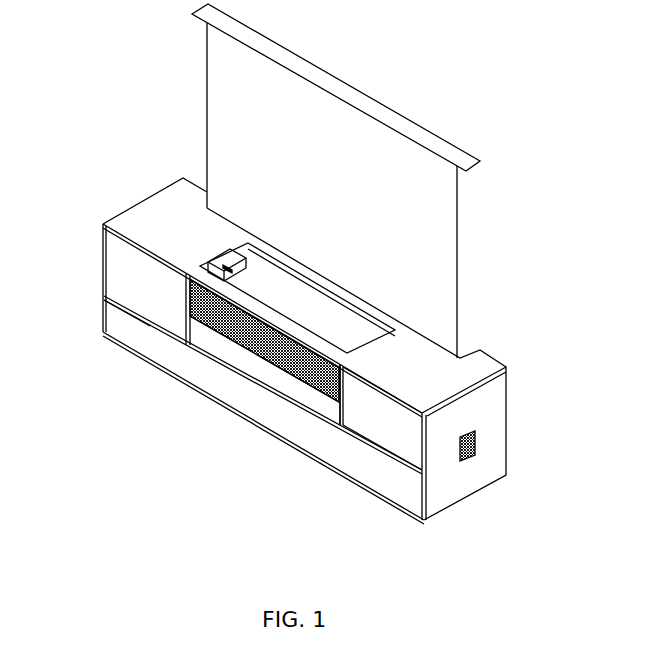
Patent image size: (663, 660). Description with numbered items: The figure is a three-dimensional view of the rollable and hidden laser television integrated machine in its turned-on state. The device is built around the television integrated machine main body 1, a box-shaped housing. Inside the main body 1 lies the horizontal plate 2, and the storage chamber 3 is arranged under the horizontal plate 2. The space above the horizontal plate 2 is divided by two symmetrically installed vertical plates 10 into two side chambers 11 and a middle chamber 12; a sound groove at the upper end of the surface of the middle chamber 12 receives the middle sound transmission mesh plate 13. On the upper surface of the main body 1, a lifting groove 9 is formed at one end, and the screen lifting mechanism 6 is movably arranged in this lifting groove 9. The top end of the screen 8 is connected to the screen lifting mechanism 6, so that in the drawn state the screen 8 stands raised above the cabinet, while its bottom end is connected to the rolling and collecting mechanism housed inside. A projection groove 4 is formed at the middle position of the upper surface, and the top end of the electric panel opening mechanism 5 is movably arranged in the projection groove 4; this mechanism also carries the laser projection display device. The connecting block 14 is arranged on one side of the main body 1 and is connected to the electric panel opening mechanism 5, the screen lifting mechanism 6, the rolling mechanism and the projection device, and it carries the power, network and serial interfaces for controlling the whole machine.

The television integrated machine main body 1 is at (495, 482).
The horizontal plate 2 is at (310, 405).
The storage chamber 3 is at (228, 385).
The projection groove 4 is at (187, 307).
The electric panel opening mechanism 5 is at (230, 250).
The screen lifting mechanism 6 is at (437, 135).
The screen 8 is at (457, 232).
The lifting groove 9 is at (480, 349).
The vertical plates 10 is at (347, 413).
The side chambers 11 is at (408, 435).
The middle chamber 12 is at (308, 398).
The middle sound transmission mesh plate 13 is at (207, 327).
The connecting block 14 is at (475, 438).